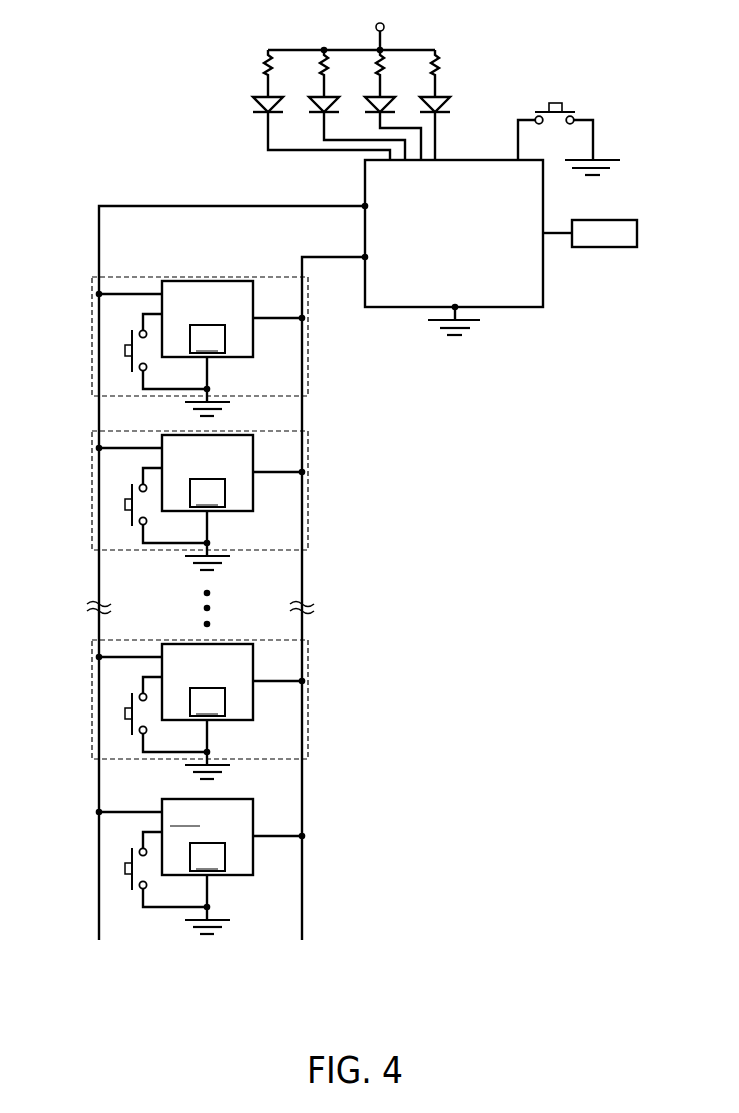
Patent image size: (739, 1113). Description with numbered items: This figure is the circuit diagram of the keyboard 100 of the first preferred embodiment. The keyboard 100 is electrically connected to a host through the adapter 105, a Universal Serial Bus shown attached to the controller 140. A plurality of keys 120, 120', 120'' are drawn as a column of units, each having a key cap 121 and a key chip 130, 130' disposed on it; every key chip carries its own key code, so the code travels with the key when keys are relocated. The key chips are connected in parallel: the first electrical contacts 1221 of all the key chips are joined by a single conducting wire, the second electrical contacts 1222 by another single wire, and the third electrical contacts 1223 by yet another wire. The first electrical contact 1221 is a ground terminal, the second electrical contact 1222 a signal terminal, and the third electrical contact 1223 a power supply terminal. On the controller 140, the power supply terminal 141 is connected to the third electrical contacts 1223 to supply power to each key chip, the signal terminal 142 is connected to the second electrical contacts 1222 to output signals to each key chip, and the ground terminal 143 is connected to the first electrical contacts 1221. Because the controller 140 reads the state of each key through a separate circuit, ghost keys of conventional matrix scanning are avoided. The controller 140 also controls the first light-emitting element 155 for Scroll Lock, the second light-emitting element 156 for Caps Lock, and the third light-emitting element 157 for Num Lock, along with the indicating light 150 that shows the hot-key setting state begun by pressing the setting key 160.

The keyboard 100 is at (337, 471).
The adapter 105 is at (619, 244).
The key 120 is at (172, 709).
The key 120' is at (200, 353).
The key 120'' is at (200, 507).
The key cap 121 is at (130, 336).
The key chip 130 is at (207, 682).
The key chip 130′ is at (203, 308).
The controller 140 is at (470, 244).
The power supply terminal 141 is at (365, 206).
The signal terminal 142 is at (365, 257).
The ground terminal 143 is at (456, 302).
The indicating light 150 is at (479, 77).
The first light-emitting element 155 is at (423, 77).
The second light-emitting element 156 is at (367, 77).
The third light-emitting element 157 is at (311, 77).
The setting key 160 is at (627, 110).
The first electrical contact 1221 is at (215, 388).
The second electrical contact 1222 is at (312, 318).
The third electrical contact 1223 is at (99, 294).